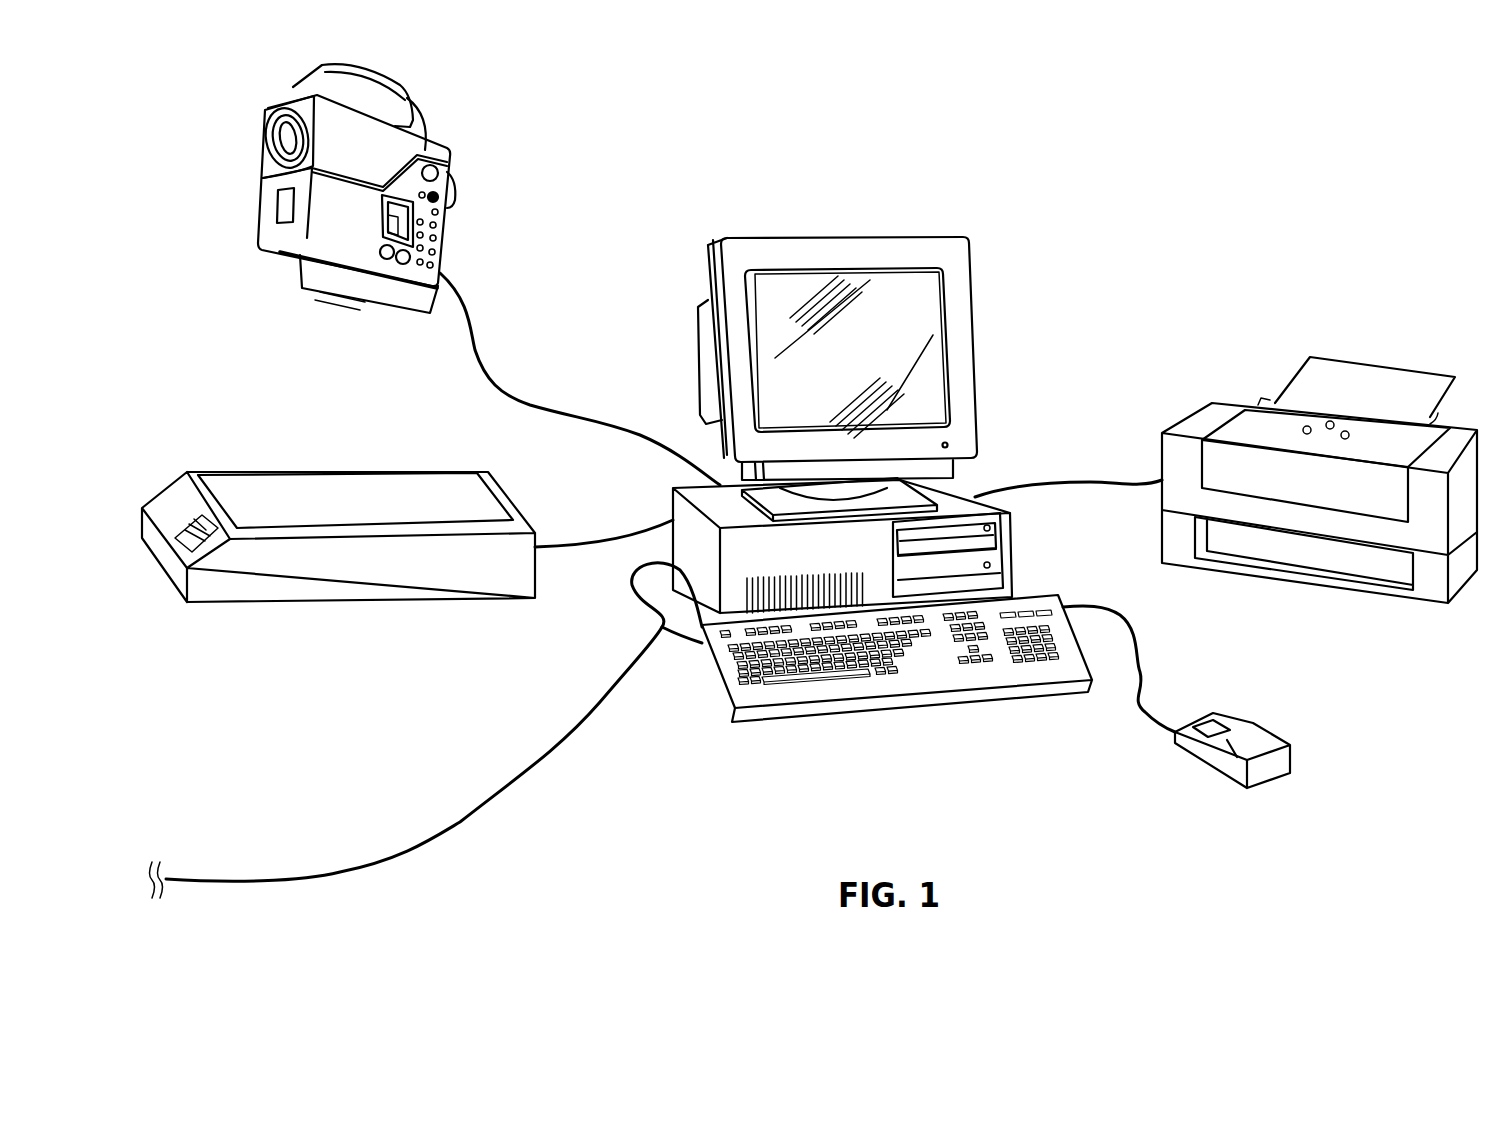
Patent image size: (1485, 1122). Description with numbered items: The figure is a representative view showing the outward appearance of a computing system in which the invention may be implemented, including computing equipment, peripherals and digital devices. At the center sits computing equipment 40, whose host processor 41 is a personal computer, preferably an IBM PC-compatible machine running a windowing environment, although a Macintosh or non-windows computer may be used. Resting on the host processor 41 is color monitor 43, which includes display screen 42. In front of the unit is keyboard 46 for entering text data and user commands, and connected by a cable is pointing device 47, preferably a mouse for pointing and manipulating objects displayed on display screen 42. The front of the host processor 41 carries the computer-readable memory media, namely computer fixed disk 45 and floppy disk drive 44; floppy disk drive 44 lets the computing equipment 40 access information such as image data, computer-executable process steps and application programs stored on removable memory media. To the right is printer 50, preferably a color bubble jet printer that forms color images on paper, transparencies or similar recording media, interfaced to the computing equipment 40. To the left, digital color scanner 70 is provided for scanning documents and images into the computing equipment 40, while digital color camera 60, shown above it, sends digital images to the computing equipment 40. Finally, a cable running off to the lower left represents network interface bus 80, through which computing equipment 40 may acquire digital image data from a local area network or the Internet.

The computing equipment 40 is at (928, 480).
The host processor 41 is at (857, 537).
The display screen 42 is at (937, 400).
The color monitor 43 is at (877, 354).
The floppy disk drive 44 is at (990, 547).
The computer fixed disk 45 is at (1003, 573).
The keyboard 46 is at (797, 697).
The pointing device 47 is at (1267, 780).
The printer 50 is at (1236, 320).
The digital color camera 60 is at (453, 147).
The digital color scanner 70 is at (453, 610).
The network interface bus 80 is at (318, 929).